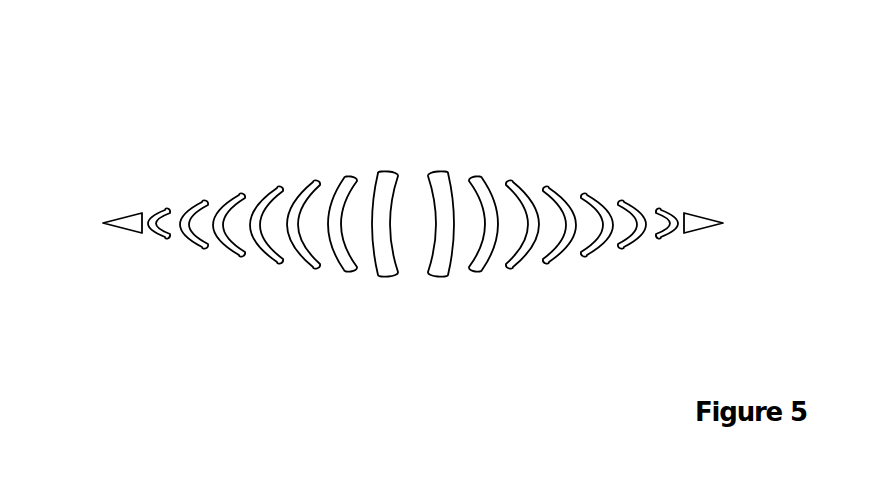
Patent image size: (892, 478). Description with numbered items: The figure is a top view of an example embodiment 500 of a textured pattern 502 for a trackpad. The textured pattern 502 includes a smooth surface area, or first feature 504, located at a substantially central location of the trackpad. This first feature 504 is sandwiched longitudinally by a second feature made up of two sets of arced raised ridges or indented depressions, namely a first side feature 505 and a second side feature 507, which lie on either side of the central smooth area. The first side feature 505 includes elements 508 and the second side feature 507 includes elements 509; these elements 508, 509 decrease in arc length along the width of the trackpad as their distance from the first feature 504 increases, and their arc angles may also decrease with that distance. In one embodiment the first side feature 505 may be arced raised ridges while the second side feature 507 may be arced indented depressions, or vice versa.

The example embodiment 500 is at (102, 123).
The textured pattern 502 is at (402, 325).
The smooth surface area (first feature) 504 is at (410, 187).
The first side feature 505 is at (725, 292).
The second side feature 507 is at (393, 291).
The elements 508 is at (604, 198).
The elements 509 is at (307, 180).